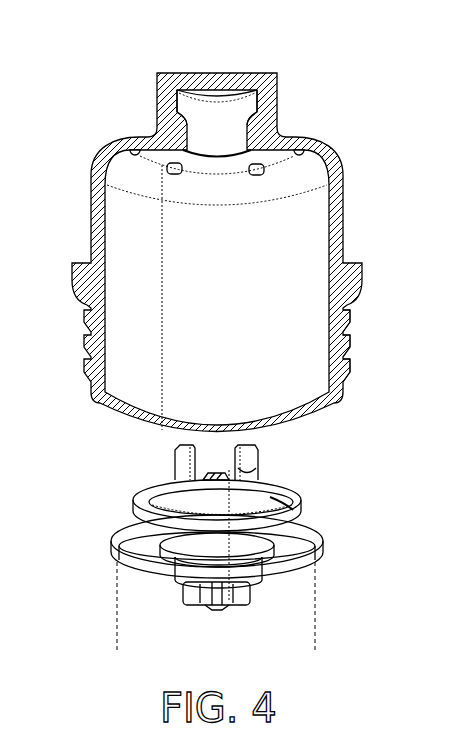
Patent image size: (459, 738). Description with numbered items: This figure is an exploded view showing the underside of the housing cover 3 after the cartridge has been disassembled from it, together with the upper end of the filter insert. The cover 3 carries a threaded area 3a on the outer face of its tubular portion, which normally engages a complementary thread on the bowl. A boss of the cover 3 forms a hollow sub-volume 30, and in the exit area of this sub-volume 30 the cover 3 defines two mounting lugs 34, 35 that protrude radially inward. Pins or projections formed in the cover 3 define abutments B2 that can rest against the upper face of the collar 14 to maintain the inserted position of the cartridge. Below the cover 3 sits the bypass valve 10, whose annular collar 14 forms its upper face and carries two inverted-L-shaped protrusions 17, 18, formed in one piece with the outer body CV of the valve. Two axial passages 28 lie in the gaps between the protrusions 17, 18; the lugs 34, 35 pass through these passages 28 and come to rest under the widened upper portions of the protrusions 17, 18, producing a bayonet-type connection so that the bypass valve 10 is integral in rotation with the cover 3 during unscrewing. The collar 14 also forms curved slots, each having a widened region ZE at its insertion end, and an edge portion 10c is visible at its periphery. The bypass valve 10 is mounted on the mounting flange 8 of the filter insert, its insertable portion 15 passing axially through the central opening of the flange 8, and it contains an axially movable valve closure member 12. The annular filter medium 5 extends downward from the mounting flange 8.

The cover 3 is at (344, 203).
The threaded area 3a is at (346, 354).
The sub-volume 30 is at (203, 115).
The mounting lug 34 is at (186, 132).
The mounting lug 35 is at (246, 122).
The abutment B2 is at (250, 176).
The bypass valve 10 is at (130, 505).
The collar 14 is at (148, 487).
The protrusion 17 is at (175, 463).
The protrusion 18 is at (260, 473).
The axial passage 28 is at (215, 460).
The widened region ZE is at (270, 500).
The disc edge portion 10c is at (300, 505).
The mounting flange 8 is at (108, 545).
The valve closure member 12 is at (182, 562).
The outer body CV is at (178, 577).
The insertable portion 15 is at (252, 562).
The filter medium 5 is at (317, 600).